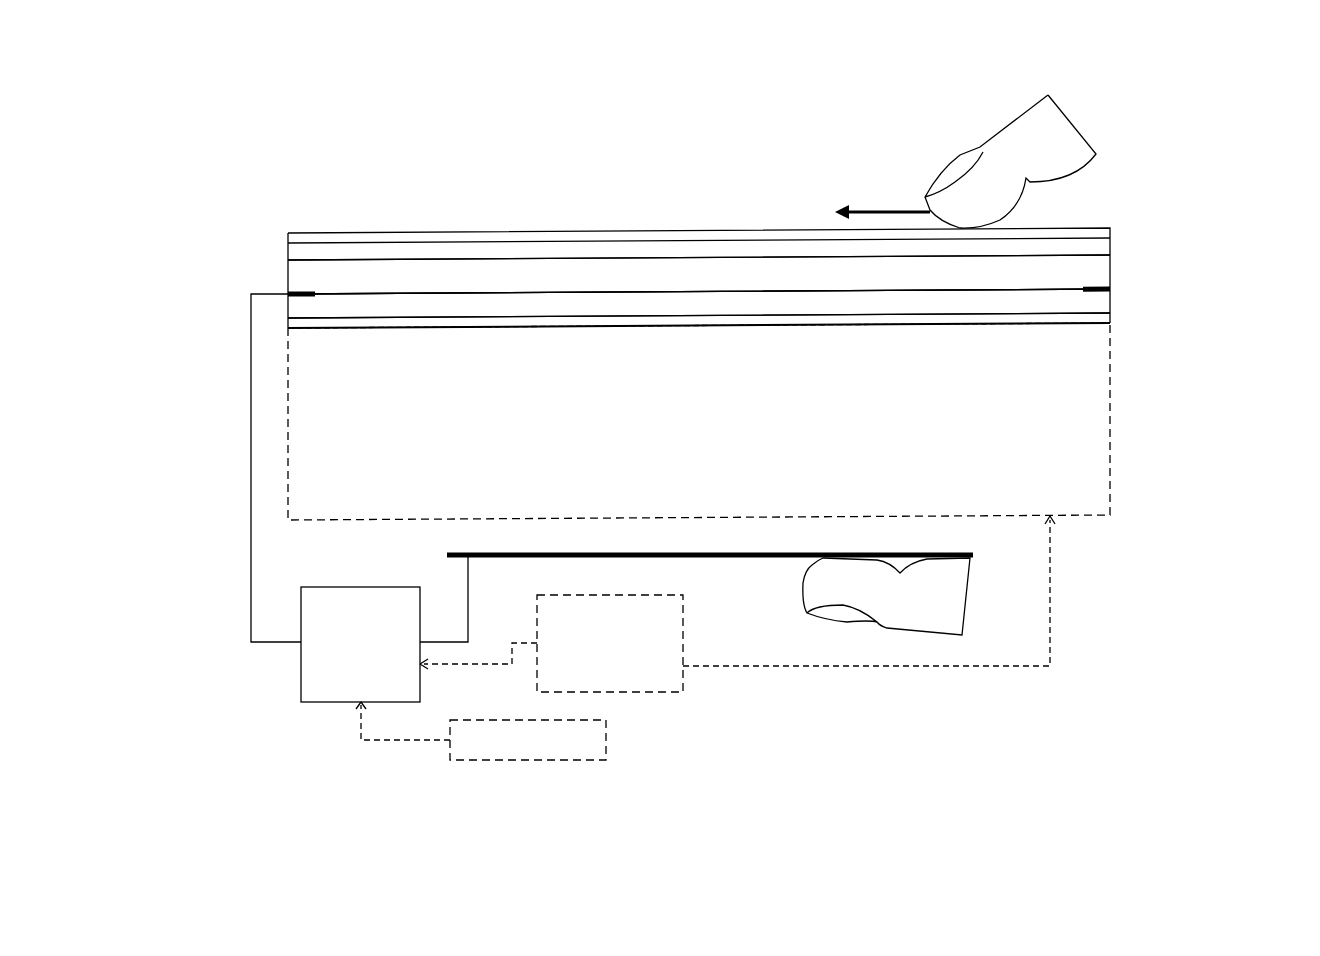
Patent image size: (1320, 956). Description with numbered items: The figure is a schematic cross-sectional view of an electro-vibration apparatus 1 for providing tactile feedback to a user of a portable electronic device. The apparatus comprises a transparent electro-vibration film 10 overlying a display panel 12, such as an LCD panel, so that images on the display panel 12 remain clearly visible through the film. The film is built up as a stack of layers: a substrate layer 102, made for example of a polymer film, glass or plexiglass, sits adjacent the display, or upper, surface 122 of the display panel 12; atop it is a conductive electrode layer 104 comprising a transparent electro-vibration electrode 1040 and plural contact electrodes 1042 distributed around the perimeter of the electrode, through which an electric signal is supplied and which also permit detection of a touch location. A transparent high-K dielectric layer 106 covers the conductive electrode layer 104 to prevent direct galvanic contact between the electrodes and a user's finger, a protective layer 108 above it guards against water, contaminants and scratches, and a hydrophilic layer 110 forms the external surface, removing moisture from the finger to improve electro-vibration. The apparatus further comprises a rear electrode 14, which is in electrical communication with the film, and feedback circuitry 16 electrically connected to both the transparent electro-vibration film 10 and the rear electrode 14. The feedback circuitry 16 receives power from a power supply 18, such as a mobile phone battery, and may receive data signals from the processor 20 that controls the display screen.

The electro-vibration apparatus 1 is at (220, 138).
The transparent electro-vibration film 10 is at (336, 194).
The hydrophilic layer 110 is at (447, 237).
The protective layer 108 is at (642, 253).
The dielectric layer 106 is at (1097, 275).
The conductive electrode layer 104 is at (1233, 218).
The contact electrodes 1042 is at (1105, 288).
The transparent electro-vibration electrode 1040 is at (1102, 300).
The substrate layer 102 is at (1053, 317).
The display surface 122 is at (514, 318).
The display panel 12 is at (1087, 485).
The rear electrode 14 is at (718, 560).
The feedback circuitry 16 is at (300, 672).
The power supply 18 is at (492, 762).
The processor 20 is at (658, 693).